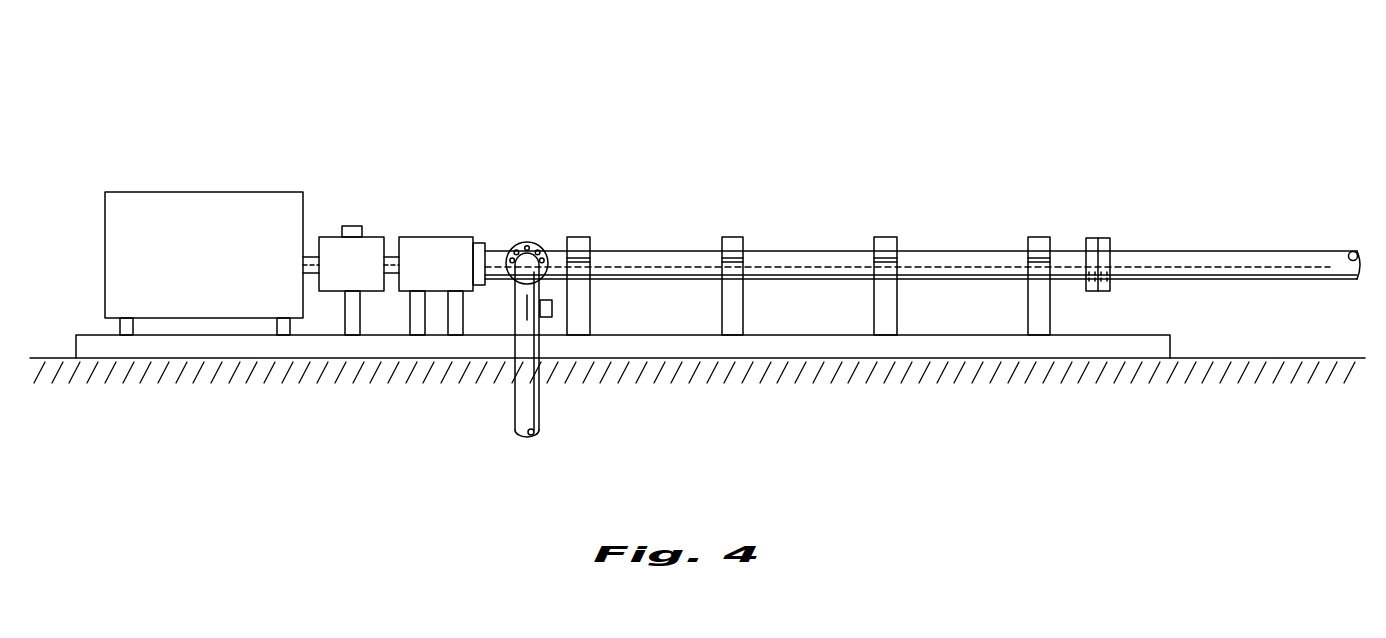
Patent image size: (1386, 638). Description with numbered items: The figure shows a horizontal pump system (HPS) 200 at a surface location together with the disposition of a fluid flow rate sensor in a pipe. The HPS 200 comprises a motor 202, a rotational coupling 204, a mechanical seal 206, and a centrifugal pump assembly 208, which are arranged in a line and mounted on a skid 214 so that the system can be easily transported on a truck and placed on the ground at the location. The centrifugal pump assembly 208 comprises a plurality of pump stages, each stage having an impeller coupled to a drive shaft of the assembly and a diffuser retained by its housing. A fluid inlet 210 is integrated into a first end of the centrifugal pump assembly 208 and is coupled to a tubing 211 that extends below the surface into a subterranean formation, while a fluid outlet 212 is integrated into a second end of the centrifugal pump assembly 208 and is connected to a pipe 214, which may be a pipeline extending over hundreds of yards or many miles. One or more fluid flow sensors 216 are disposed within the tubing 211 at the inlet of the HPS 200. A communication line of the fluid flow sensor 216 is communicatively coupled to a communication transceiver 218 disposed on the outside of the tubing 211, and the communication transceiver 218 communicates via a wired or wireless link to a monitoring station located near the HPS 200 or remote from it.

The horizontal pump system 200 is at (833, 108).
The motor 202 is at (204, 192).
The rotational coupling 204 is at (365, 258).
The mechanical seal 206 is at (450, 258).
The centrifugal pump assembly 208 is at (653, 251).
The fluid inlet 210 is at (527, 243).
The tubing 211 is at (538, 403).
The fluid outlet 212 is at (1094, 238).
The pipe 214 is at (213, 346).
The fluid flow sensor 216 is at (523, 308).
The communication transceiver 218 is at (553, 308).